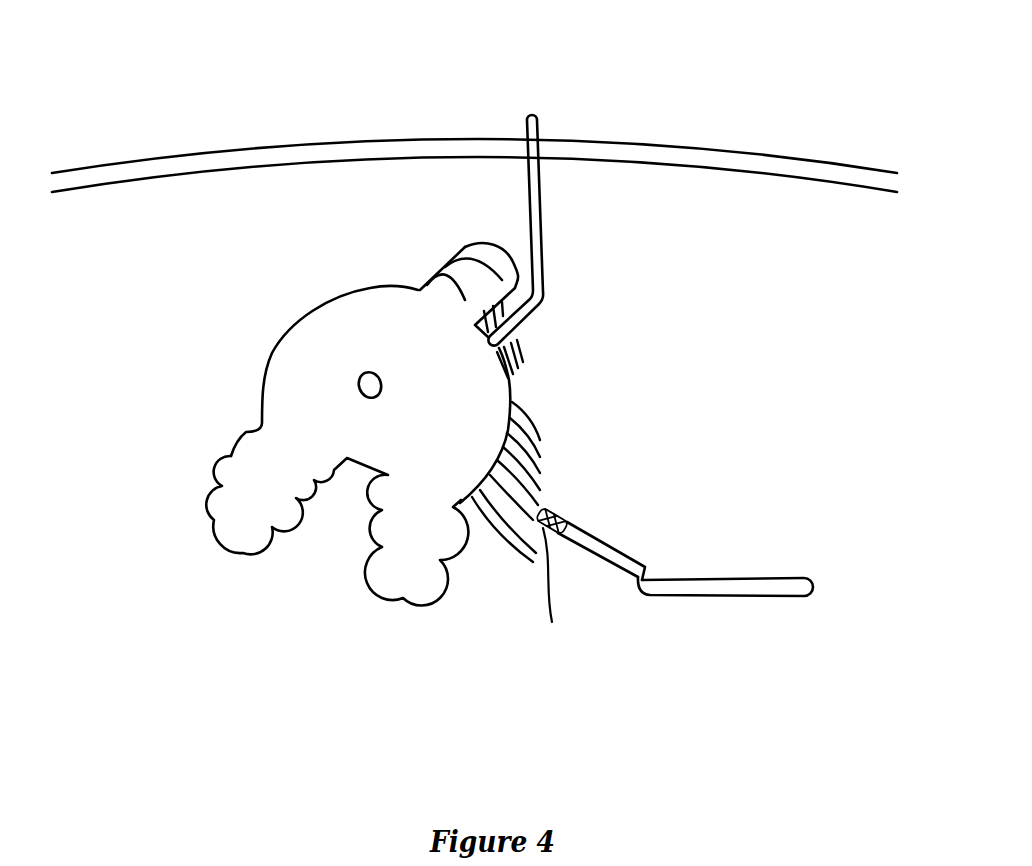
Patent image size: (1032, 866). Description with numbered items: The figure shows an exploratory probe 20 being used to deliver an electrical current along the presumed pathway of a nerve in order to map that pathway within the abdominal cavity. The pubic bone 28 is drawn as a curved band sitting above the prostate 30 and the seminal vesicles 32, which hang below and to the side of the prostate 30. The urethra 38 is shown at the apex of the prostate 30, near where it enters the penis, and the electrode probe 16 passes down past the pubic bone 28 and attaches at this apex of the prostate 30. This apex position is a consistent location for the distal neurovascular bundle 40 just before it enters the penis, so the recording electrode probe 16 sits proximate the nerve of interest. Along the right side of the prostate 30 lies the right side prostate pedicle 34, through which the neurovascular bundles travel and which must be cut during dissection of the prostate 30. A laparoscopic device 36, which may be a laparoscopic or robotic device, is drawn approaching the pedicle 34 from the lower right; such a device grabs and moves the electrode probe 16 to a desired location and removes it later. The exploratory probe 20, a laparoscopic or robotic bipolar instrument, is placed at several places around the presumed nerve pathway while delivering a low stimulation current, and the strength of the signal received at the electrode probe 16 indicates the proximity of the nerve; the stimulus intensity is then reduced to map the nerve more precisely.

The electrode probe 16 is at (530, 120).
The exploratory probe 20 is at (457, 581).
The pubic bone 28 is at (773, 82).
The prostate 30 is at (307, 337).
The seminal vesicles 32 is at (270, 462).
The prostate pedicle 34 is at (540, 454).
The laparoscopic device 36 is at (740, 580).
The urethra 38 is at (447, 262).
The distal neurovascular bundle 40 is at (518, 347).